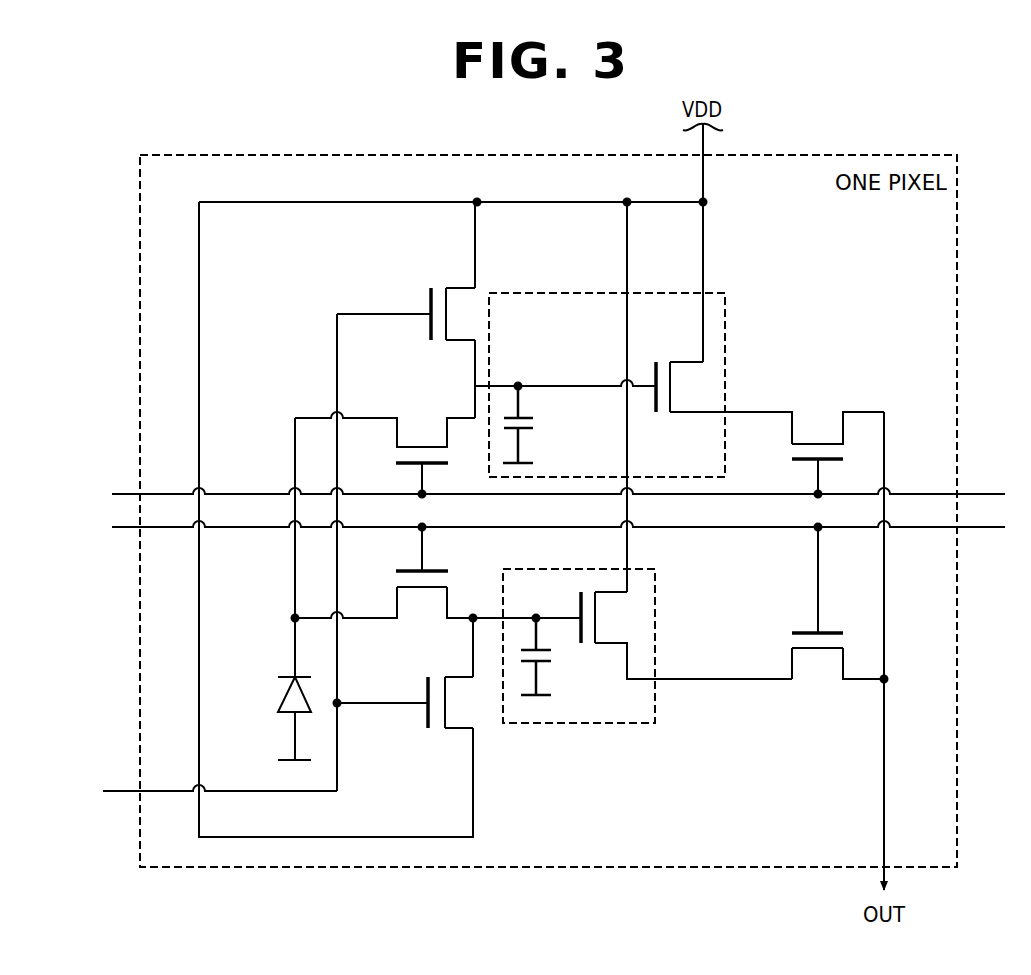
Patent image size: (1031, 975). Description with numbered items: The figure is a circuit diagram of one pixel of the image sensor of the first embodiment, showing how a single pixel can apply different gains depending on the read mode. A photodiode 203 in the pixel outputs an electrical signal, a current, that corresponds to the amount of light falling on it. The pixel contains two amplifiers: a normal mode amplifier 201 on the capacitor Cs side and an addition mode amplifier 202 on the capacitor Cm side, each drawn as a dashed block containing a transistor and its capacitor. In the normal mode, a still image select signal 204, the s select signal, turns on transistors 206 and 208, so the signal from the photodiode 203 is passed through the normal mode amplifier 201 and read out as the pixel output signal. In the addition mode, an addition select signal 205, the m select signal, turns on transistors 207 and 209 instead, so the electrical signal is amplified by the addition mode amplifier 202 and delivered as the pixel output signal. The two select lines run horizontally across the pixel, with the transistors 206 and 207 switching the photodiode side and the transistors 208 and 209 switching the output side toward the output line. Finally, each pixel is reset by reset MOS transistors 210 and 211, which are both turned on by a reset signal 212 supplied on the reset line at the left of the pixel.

The normal mode amplifier 201 is at (633, 725).
The addition mode amplifier 202 is at (703, 295).
The photodiode 203 is at (282, 690).
The still image select signal 204 is at (115, 527).
The addition select signal 205 is at (114, 493).
The transistor 206 is at (420, 616).
The transistor 207 is at (421, 423).
The transistor 208 is at (815, 681).
The transistor 209 is at (819, 416).
The reset MOS transistor 210 is at (436, 738).
The reset MOS transistor 211 is at (436, 285).
The reset signal 212 is at (112, 790).